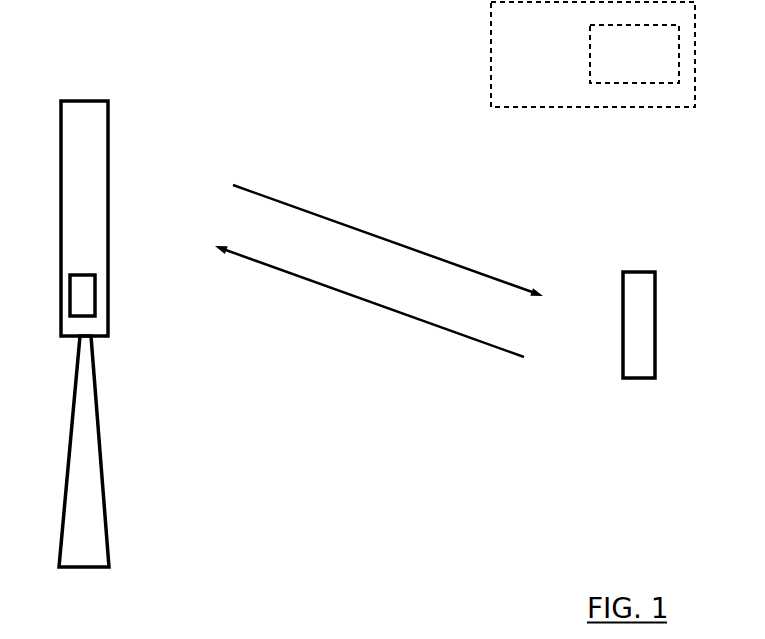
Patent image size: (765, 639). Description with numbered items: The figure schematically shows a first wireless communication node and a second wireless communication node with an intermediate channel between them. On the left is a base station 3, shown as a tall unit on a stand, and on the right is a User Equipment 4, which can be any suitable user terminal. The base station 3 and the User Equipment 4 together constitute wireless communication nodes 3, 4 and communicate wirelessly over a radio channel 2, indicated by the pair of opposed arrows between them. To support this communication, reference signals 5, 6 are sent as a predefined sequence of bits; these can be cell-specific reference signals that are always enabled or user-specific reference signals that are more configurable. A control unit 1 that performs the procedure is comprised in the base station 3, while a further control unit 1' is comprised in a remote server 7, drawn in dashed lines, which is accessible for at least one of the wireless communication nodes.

The control unit 1 is at (147, 332).
The control unit 1' is at (634, 54).
The radio channel 2 is at (343, 153).
The base station 3 is at (128, 207).
The user equipment 4 is at (640, 347).
The reference signal 5 is at (470, 268).
The reference signal 6 is at (347, 295).
The remote server 7 is at (515, 66).